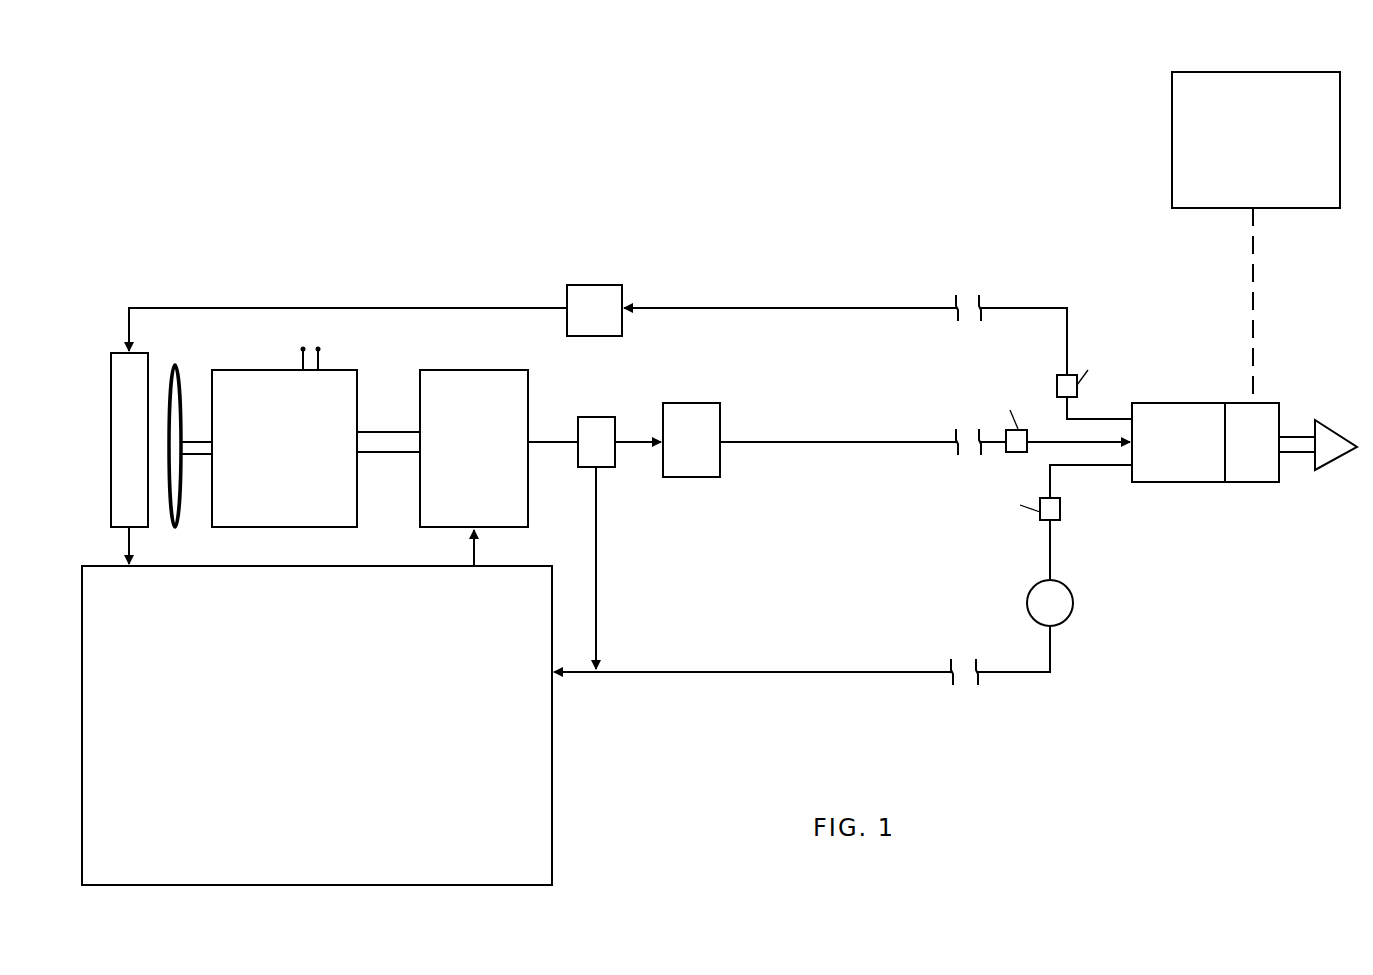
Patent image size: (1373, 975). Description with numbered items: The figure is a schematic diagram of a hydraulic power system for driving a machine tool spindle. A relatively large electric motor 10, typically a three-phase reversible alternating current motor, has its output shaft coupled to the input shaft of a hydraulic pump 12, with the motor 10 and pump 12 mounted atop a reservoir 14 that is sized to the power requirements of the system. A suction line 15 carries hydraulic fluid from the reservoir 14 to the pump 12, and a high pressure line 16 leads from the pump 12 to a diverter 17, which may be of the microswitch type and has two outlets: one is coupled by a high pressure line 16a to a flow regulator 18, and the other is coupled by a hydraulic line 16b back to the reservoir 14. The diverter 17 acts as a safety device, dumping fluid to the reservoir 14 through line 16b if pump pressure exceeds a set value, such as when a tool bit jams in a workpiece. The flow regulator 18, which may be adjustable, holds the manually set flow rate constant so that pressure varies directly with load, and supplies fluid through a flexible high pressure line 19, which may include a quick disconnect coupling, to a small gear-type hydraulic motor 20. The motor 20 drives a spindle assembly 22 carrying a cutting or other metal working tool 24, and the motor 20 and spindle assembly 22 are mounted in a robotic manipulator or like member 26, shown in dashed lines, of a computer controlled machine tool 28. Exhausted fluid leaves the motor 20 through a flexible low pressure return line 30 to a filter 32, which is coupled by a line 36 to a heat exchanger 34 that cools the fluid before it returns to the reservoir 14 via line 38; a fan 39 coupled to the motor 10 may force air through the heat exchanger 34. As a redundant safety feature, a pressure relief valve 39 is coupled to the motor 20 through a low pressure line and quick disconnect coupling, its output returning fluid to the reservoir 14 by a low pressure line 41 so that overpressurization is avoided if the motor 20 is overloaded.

The electric motor 10 is at (288, 509).
The hydraulic pump 12 is at (488, 509).
The reservoir 14 is at (326, 800).
The suction line 15 is at (477, 555).
The high pressure line 16 is at (553, 442).
The high pressure line 16a is at (633, 445).
The hydraulic line 16b is at (597, 574).
The diverter 17 is at (597, 415).
The flow regulator 18 is at (707, 403).
The flexible high pressure line 19 is at (823, 440).
The hydraulic motor 20 is at (1180, 482).
The spindle assembly 22 is at (1248, 482).
The cutting tool 24 is at (1323, 468).
The robotic manipulator 26 is at (1252, 270).
The machine tool 28 is at (1173, 130).
The low pressure return line 30 is at (832, 305).
The filter 32 is at (565, 292).
The heat exchanger 34 is at (110, 363).
The line 36 is at (252, 305).
The line 38 is at (133, 540).
The fan / pressure relief valve 39 is at (175, 367).
The low pressure line 41 is at (737, 670).